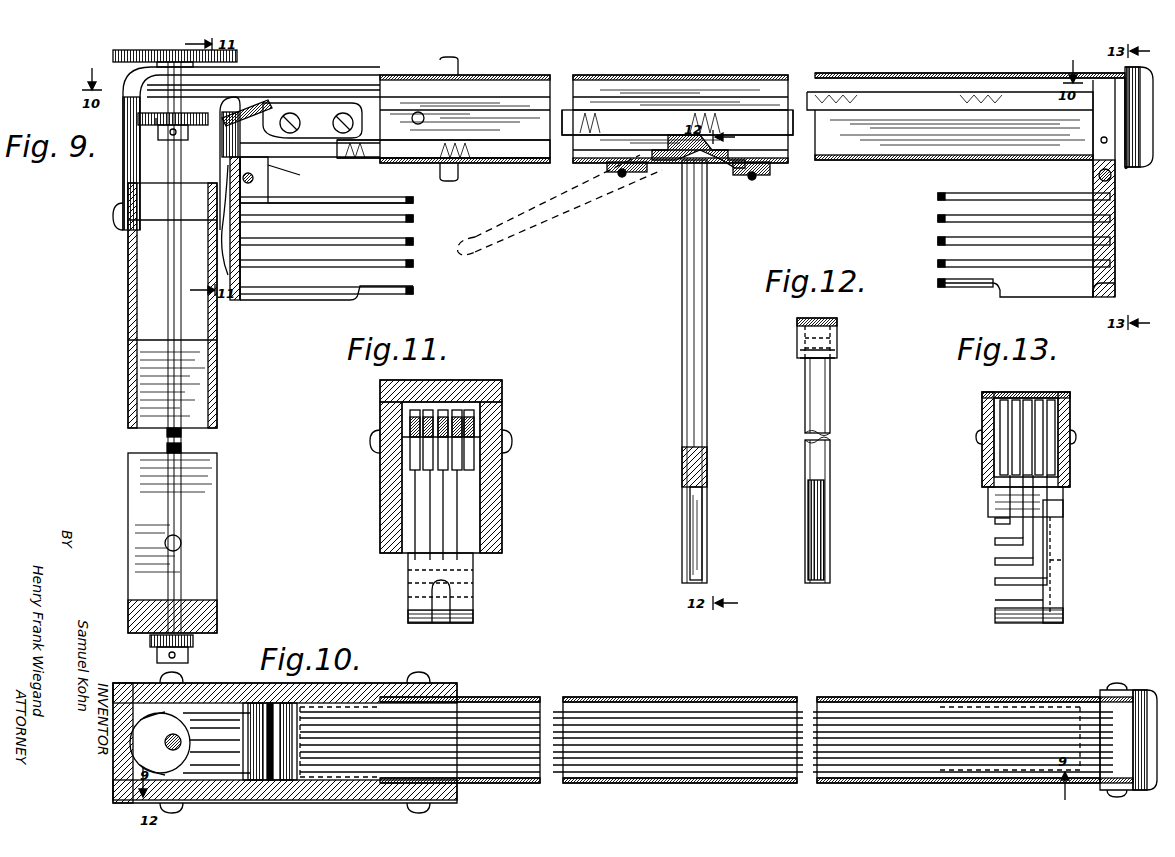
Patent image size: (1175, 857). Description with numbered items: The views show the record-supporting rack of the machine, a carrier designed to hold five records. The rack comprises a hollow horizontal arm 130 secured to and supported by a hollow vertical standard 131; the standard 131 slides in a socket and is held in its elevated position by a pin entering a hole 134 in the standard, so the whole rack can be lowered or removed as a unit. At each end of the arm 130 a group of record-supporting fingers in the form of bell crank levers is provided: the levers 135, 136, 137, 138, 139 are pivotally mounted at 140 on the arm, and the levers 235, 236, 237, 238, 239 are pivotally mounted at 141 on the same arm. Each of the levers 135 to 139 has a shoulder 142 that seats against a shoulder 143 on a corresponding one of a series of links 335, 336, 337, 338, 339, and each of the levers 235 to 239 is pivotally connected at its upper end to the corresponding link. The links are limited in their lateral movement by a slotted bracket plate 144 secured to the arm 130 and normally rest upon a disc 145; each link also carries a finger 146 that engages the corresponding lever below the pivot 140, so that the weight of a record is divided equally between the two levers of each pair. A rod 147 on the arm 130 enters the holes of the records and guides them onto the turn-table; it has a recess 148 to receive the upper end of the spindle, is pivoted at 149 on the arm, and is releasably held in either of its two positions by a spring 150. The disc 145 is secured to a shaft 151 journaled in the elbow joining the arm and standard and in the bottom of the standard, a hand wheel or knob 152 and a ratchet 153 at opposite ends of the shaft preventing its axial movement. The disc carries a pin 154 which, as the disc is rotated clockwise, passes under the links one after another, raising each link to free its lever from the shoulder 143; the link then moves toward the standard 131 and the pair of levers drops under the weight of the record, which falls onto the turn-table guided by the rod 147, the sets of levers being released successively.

In FIG. 9, the hollow horizontal arm 130 is at (740, 75).
In FIG. 13, the hollow horizontal arm 130 is at (994, 462).
In FIG. 10, the hollow horizontal arm 130 is at (703, 682).
In FIG. 9, the hollow vertical standard 131 is at (205, 385).
In FIG. 9, the hole 134 is at (181, 540).
In FIG. 9, the record-supporting lever 135 is at (413, 291).
In FIG. 11, the record-supporting lever 135 is at (465, 605).
In FIG. 9, the record-supporting lever 136 is at (413, 263).
In FIG. 11, the record-supporting lever 136 is at (455, 575).
In FIG. 9, the record-supporting lever 137 is at (413, 241).
In FIG. 11, the record-supporting lever 137 is at (470, 558).
In FIG. 9, the record-supporting lever 138 is at (413, 218).
In FIG. 11, the record-supporting lever 138 is at (480, 537).
In FIG. 9, the record-supporting lever 139 is at (413, 198).
In FIG. 11, the record-supporting lever 139 is at (470, 520).
In FIG. 10, the record-supporting lever 139 is at (372, 697).
In FIG. 9, the pivot 140 is at (255, 185).
In FIG. 9, the pivot 141 is at (1097, 175).
In FIG. 9, the shoulder 142 is at (295, 180).
In FIG. 9, the shoulder 143 is at (258, 145).
In FIG. 9, the slotted bracket plate 144 is at (262, 106).
In FIG. 10, the slotted bracket plate 144 is at (300, 703).
In FIG. 9, the disc 145 is at (158, 118).
In FIG. 10, the disc 145 is at (160, 712).
In FIG. 9, the finger 146 is at (226, 255).
In FIG. 9, the rod 147 is at (682, 318).
In FIG. 12, the rod 147 is at (808, 392).
In FIG. 9, the recess 148 is at (700, 530).
In FIG. 12, the recess 148 is at (832, 542).
In FIG. 9, the pivot 149 is at (708, 166).
In FIG. 12, the pivot 149 is at (832, 357).
In FIG. 9, the spring 150 is at (668, 165).
In FIG. 12, the spring 150 is at (800, 333).
In FIG. 9, the shaft 151 is at (181, 326).
In FIG. 9, the hand wheel or knob 152 is at (113, 53).
In FIG. 9, the ratchet 153 is at (195, 640).
In FIG. 9, the pin 154 is at (166, 108).
In FIG. 10, the pin 154 is at (195, 703).
In FIG. 9, the record-supporting lever 235 is at (938, 284).
In FIG. 13, the record-supporting lever 235 is at (995, 617).
In FIG. 9, the record-supporting lever 236 is at (938, 263).
In FIG. 13, the record-supporting lever 236 is at (995, 582).
In FIG. 9, the record-supporting lever 237 is at (938, 241).
In FIG. 13, the record-supporting lever 237 is at (995, 562).
In FIG. 9, the record-supporting lever 238 is at (938, 218).
In FIG. 13, the record-supporting lever 238 is at (995, 542).
In FIG. 9, the record-supporting lever 239 is at (938, 195).
In FIG. 13, the record-supporting lever 239 is at (995, 523).
In FIG. 10, the record-supporting lever 239 is at (1045, 705).
In FIG. 11, the link 335 is at (402, 427).
In FIG. 13, the link 335 is at (1070, 396).
In FIG. 10, the link 335 is at (835, 712).
In FIG. 11, the link 336 is at (410, 418).
In FIG. 13, the link 336 is at (1040, 400).
In FIG. 10, the link 336 is at (910, 725).
In FIG. 11, the link 337 is at (440, 410).
In FIG. 13, the link 337 is at (1028, 400).
In FIG. 10, the link 337 is at (955, 738).
In FIG. 11, the link 338 is at (465, 410).
In FIG. 13, the link 338 is at (1004, 400).
In FIG. 10, the link 338 is at (898, 758).
In FIG. 9, the link 339 is at (615, 118).
In FIG. 11, the link 339 is at (502, 388).
In FIG. 13, the link 339 is at (994, 417).
In FIG. 10, the link 339 is at (938, 772).